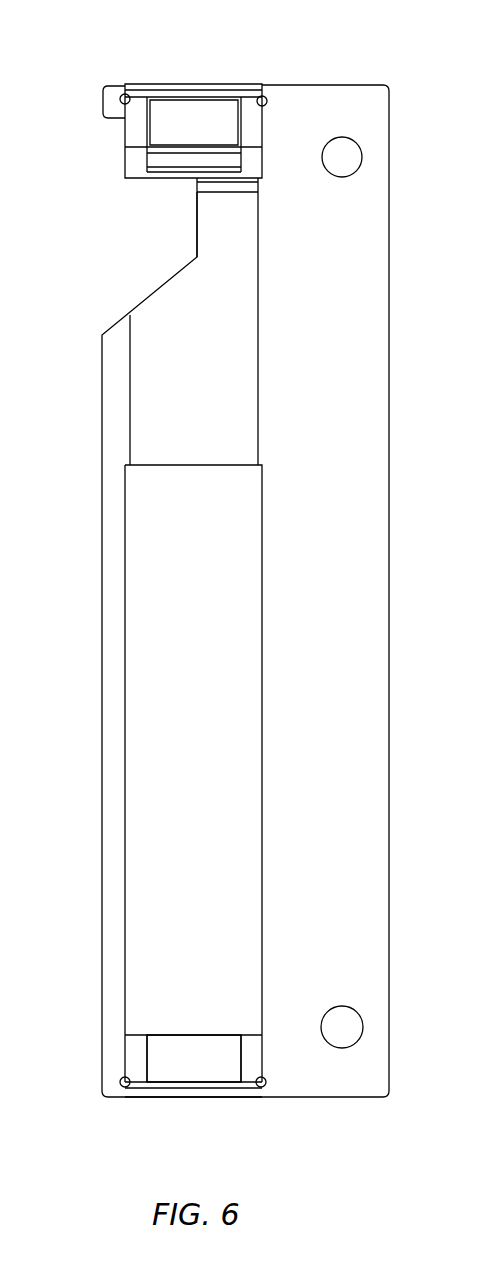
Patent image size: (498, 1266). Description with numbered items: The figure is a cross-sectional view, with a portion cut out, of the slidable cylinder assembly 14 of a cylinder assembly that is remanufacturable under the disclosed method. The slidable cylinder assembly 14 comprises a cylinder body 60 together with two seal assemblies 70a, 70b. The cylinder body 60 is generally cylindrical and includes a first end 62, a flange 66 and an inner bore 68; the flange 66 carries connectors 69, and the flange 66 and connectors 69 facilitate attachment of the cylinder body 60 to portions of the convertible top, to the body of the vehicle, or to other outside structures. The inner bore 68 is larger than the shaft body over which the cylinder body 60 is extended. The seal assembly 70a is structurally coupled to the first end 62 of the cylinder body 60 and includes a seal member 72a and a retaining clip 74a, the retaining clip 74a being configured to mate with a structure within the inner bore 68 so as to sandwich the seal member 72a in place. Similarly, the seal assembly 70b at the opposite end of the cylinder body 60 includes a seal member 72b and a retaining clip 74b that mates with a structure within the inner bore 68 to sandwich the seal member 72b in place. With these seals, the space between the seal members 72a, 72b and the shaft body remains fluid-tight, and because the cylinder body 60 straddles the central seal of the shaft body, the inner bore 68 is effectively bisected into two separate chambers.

The slidable cylinder assembly 14 is at (97, 637).
The cylinder body 60 is at (97, 543).
The first end 62 is at (98, 103).
The flange 66 is at (389, 592).
The inner bore 68 is at (127, 885).
The connectors 69 is at (363, 157).
The seal assembly 70a is at (158, 80).
The seal assembly 70b is at (190, 1105).
The seal member 72a is at (240, 125).
The seal member 72b is at (250, 1097).
The retaining clip 74a is at (266, 99).
The retaining clip 74b is at (131, 1100).